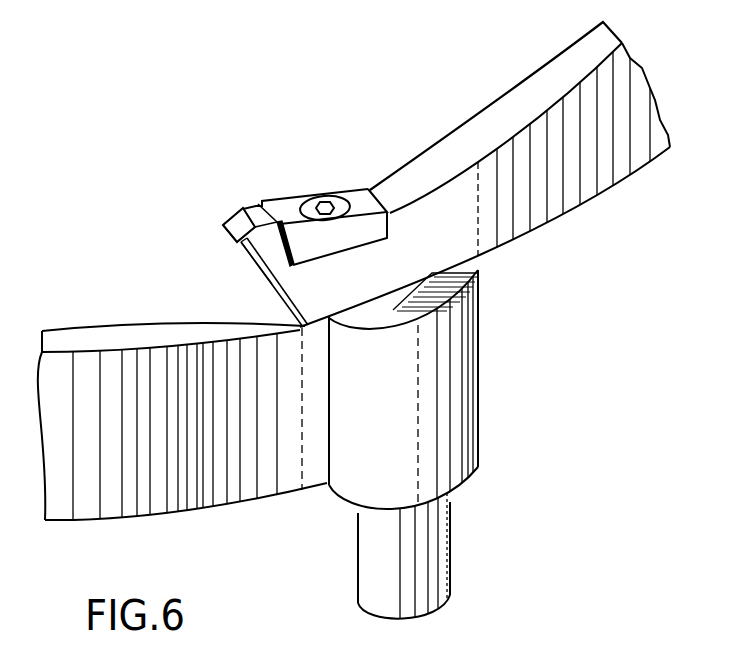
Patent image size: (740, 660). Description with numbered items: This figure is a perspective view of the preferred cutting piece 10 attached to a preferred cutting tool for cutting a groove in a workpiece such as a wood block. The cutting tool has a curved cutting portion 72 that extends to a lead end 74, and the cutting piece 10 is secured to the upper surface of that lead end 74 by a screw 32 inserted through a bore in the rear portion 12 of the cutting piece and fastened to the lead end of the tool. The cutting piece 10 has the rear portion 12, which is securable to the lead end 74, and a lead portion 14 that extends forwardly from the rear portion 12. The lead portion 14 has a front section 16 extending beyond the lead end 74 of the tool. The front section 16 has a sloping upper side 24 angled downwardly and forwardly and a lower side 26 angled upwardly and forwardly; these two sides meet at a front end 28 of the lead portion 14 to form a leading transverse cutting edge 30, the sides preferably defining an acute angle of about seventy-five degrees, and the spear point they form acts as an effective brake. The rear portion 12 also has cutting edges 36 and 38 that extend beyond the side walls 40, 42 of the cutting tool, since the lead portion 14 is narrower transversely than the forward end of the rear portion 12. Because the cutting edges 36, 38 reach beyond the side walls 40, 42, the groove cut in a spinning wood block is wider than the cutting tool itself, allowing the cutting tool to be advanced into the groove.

The cutting piece 10 is at (347, 189).
The rear portion 12 is at (333, 240).
The lead portion 14 is at (240, 214).
The front section 16 is at (223, 223).
The sloping upper side 24 is at (232, 216).
The lower side 26 is at (244, 254).
The front end 28 is at (234, 240).
The leading transverse cutting edge 30 is at (221, 232).
The screw 32 is at (327, 202).
The cutting edge 36 is at (260, 200).
The cutting edge 38 is at (281, 224).
The side wall 40 is at (415, 163).
The side wall 42 is at (313, 310).
The cutting portion 72 is at (563, 192).
The lead end 74 is at (260, 286).